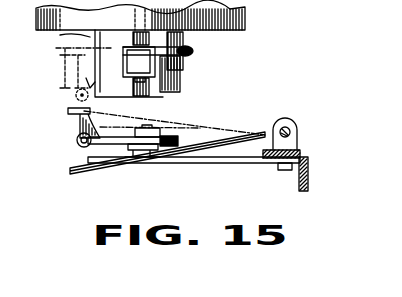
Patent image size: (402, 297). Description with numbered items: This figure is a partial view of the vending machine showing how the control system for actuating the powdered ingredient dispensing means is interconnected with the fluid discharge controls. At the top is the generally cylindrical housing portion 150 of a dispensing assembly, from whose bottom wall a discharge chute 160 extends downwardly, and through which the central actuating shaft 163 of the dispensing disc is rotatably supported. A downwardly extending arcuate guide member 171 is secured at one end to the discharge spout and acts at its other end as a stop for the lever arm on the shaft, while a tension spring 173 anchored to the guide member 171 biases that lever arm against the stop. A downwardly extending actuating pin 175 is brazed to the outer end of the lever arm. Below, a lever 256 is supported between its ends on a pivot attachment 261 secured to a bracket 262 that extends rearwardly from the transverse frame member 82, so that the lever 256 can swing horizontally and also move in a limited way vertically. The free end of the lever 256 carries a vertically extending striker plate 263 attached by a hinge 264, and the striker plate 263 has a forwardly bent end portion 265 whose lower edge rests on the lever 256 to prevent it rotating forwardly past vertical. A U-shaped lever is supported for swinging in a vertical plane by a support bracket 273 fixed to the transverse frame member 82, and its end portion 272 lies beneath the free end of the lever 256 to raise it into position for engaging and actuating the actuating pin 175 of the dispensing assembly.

The housing portion 150 is at (246, 20).
The actuating shaft 163 is at (92, 39).
The discharge chute 160 is at (66, 60).
The arcuate guide member 171 is at (186, 40).
The tension spring 173 is at (193, 51).
The actuating pin 175 is at (170, 77).
The striker plate 263 is at (70, 119).
The hinge 264 is at (74, 140).
The forwardly bent end portion 265 is at (162, 128).
The pivot attachment 261 is at (118, 153).
The lever 256 is at (190, 122).
The end portion 272 is at (98, 172).
The bracket 262 is at (245, 164).
The support bracket 273 is at (303, 122).
The transverse frame member 82 is at (309, 178).